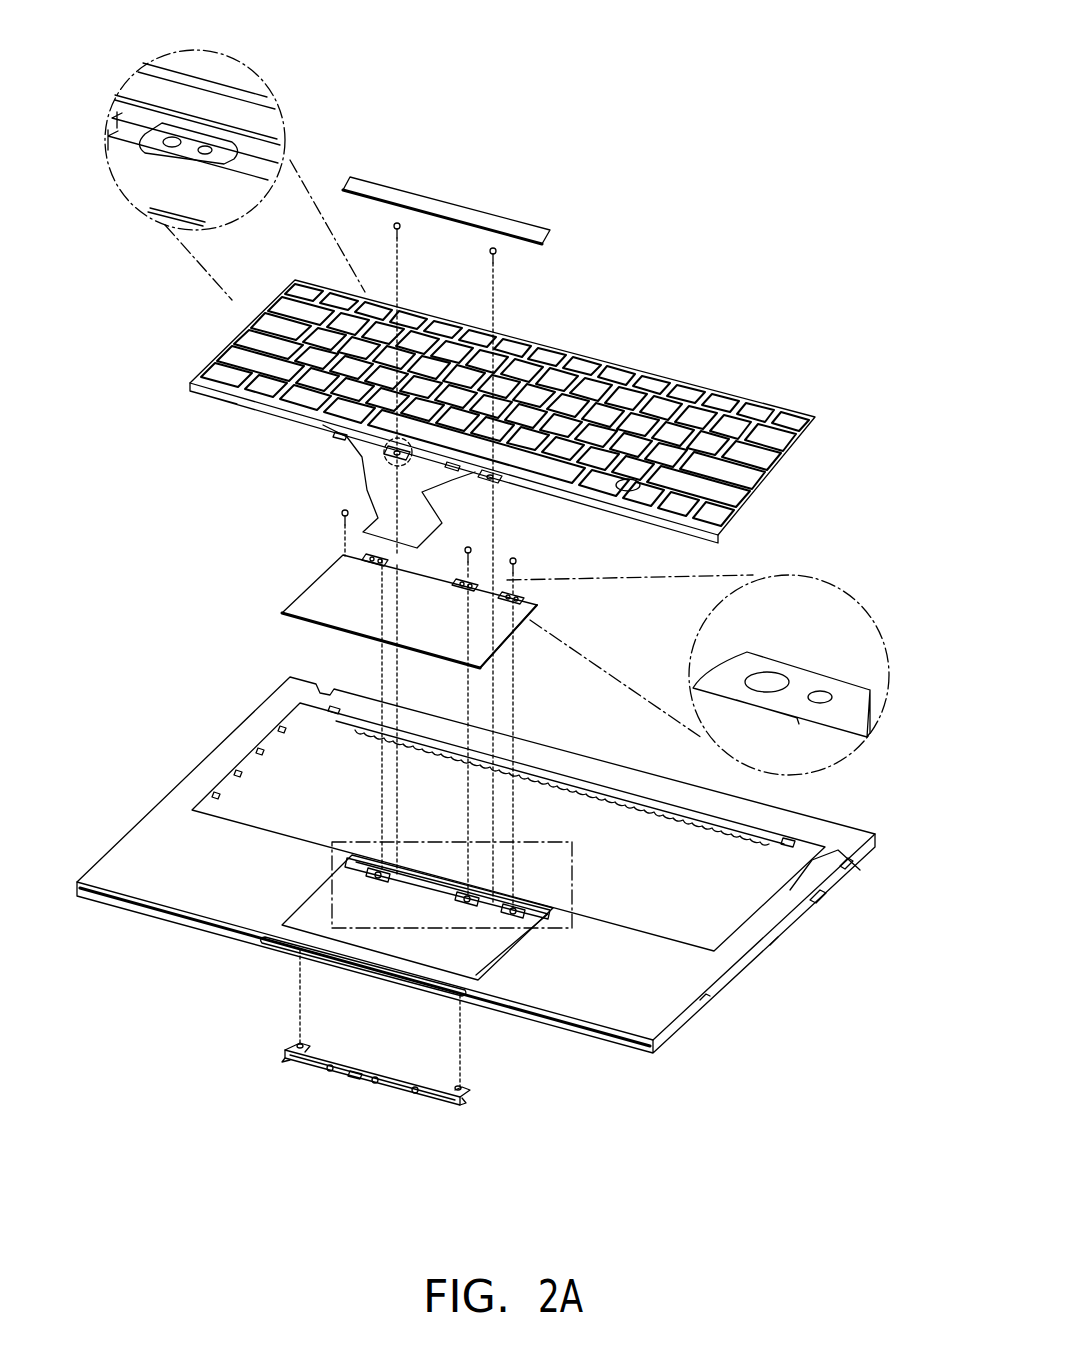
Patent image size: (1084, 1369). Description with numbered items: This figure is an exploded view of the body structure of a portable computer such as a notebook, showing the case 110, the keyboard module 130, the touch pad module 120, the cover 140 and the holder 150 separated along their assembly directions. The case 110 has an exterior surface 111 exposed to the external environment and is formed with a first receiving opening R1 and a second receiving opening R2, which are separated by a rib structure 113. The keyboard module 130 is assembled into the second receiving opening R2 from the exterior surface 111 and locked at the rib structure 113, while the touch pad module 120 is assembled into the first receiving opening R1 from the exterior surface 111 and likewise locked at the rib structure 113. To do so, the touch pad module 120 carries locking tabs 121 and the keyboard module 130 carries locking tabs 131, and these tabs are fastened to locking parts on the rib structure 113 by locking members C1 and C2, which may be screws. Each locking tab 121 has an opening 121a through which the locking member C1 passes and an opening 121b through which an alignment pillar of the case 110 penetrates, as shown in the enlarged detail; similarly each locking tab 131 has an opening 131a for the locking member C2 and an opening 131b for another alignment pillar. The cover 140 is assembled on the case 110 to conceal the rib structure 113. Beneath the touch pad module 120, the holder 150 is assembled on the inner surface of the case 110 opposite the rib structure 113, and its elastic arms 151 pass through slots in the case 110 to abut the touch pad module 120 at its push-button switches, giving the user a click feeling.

The case 110 is at (476, 883).
The exterior surface 111 is at (167, 840).
The rib structure 113 is at (380, 895).
The touch pad module 120 is at (244, 577).
The locking tab 121 is at (460, 582).
The opening 121a is at (769, 678).
The opening 121b is at (836, 698).
The keyboard module 130 is at (600, 345).
The locking tab 131 is at (175, 153).
The opening 131a is at (176, 128).
The opening 131b is at (208, 138).
The cover 140 is at (452, 205).
The holder 150 is at (365, 1112).
The elastic arm 151 is at (300, 1044).
The locking member C1 is at (342, 513).
The locking member C2 is at (492, 252).
The first receiving opening R1 is at (482, 960).
The second receiving opening R2 is at (712, 910).